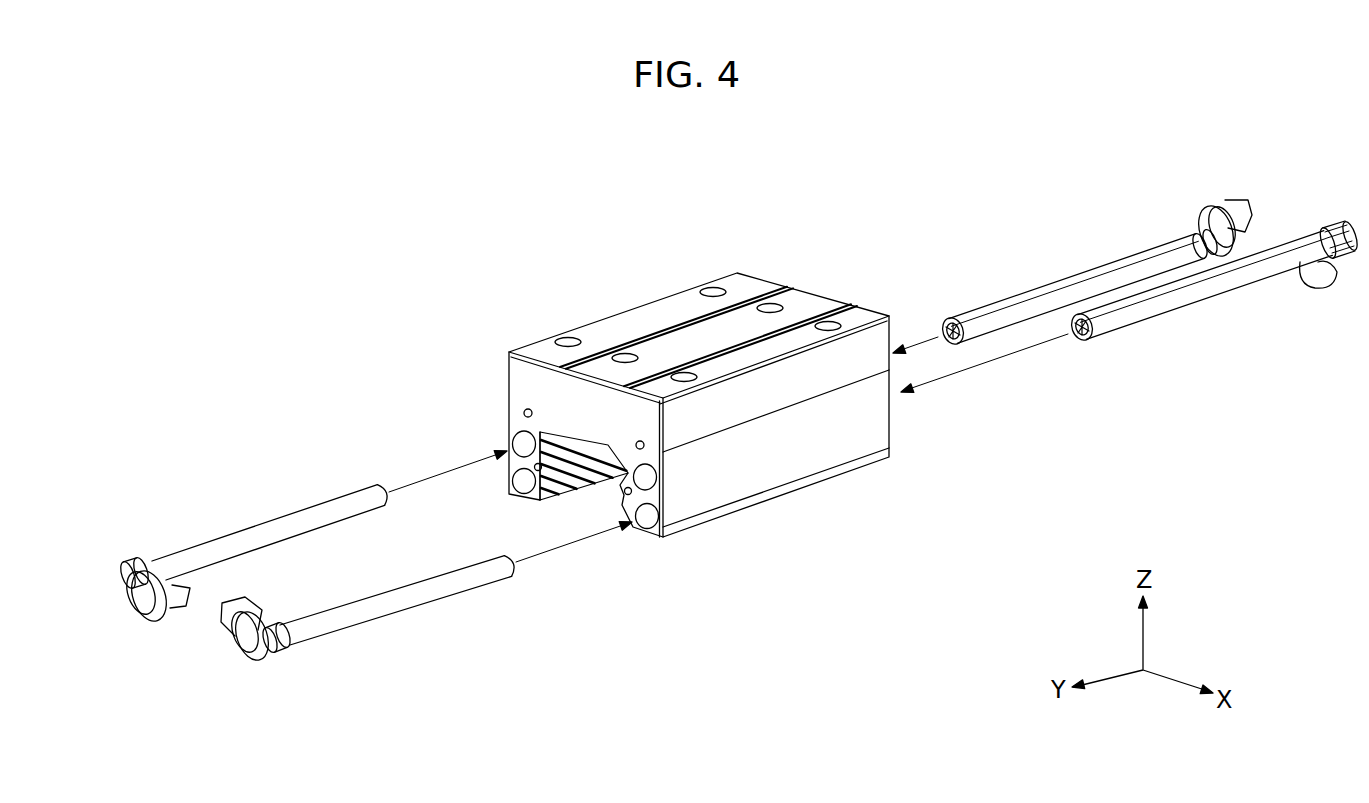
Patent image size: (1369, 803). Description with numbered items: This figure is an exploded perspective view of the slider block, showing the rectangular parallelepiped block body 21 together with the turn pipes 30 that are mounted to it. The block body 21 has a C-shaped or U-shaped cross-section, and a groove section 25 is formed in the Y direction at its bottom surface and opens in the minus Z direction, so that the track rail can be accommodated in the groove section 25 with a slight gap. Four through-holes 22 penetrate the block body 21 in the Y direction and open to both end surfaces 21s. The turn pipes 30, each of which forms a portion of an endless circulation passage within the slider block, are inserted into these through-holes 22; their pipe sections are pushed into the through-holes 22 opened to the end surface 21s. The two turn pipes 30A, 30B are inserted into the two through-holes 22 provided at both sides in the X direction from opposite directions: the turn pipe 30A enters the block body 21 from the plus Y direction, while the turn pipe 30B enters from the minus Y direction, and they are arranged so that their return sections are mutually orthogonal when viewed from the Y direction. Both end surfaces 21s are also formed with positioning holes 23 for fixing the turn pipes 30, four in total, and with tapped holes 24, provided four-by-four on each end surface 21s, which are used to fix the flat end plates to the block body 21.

The block body 21 is at (658, 303).
The end surface 21s is at (517, 368).
The through-hole 22 is at (513, 442).
The positioning hole 23 is at (535, 470).
The tapped hole 24 is at (523, 411).
The groove section 25 is at (566, 508).
The turn pipe 30 is at (739, 433).
The turn pipe 30A is at (403, 612).
The turn pipe 30B is at (273, 520).